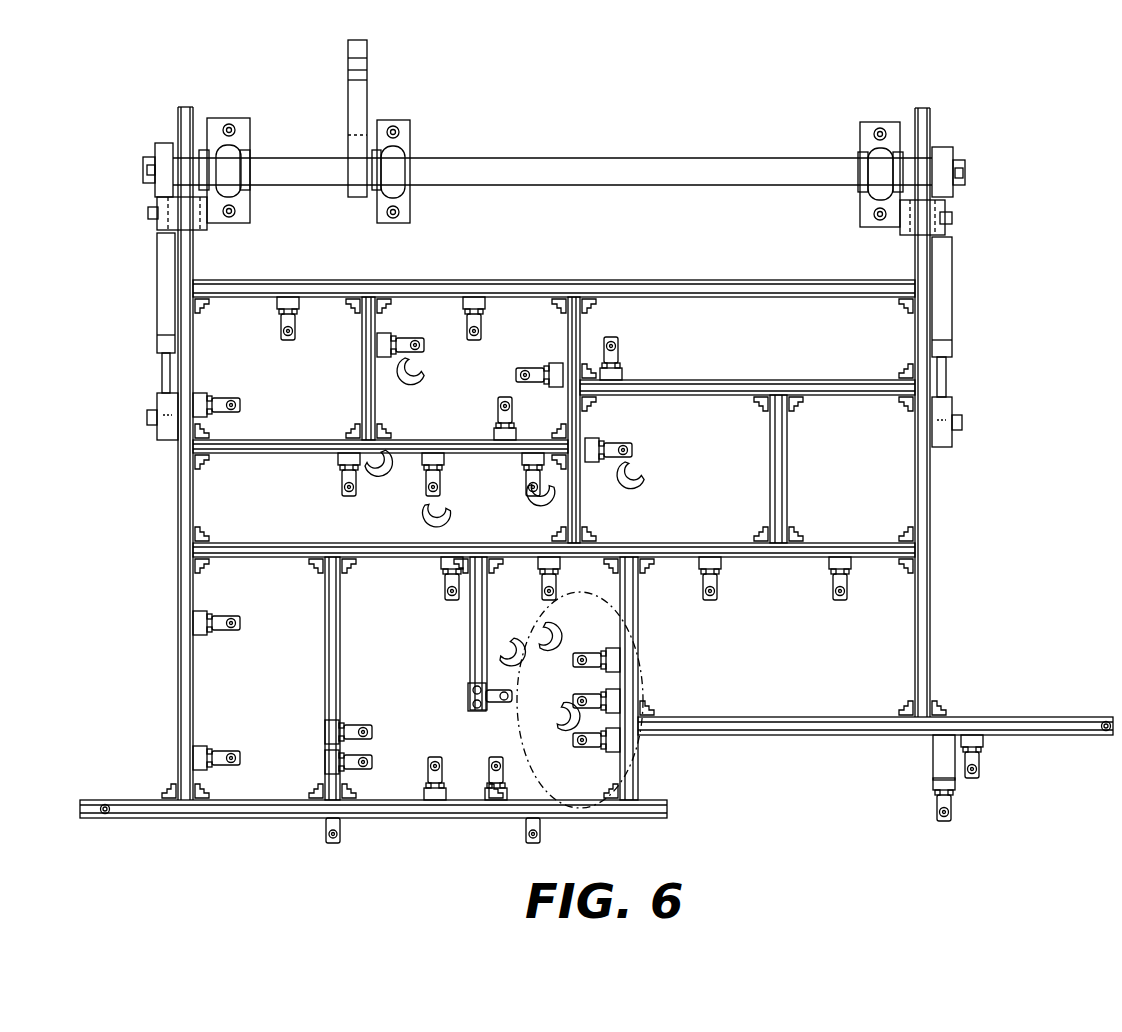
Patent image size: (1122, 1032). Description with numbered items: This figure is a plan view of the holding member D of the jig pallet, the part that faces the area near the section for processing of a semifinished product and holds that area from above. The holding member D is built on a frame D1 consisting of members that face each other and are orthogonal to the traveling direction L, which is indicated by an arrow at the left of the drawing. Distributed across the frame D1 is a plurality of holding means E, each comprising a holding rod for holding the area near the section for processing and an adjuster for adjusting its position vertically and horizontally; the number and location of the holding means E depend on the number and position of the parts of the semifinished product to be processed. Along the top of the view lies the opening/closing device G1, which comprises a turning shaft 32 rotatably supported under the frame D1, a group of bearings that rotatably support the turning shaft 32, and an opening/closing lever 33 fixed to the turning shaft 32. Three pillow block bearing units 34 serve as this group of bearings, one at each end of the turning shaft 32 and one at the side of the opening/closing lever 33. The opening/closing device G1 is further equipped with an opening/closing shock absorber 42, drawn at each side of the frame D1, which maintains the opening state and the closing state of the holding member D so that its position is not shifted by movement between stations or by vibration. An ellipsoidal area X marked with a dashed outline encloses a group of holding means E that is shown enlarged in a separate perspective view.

The turning shaft 32 is at (630, 172).
The opening/closing lever 33 is at (357, 96).
The bearing block 34 is at (230, 155).
The opening/closing shock absorber 42 is at (165, 304).
The opening/closing device G1 is at (322, 95).
The holding means E is at (640, 360).
The holding member D is at (946, 644).
The frame D1 is at (932, 508).
The traveling direction L is at (117, 473).
The ellipsoidal area X is at (530, 615).